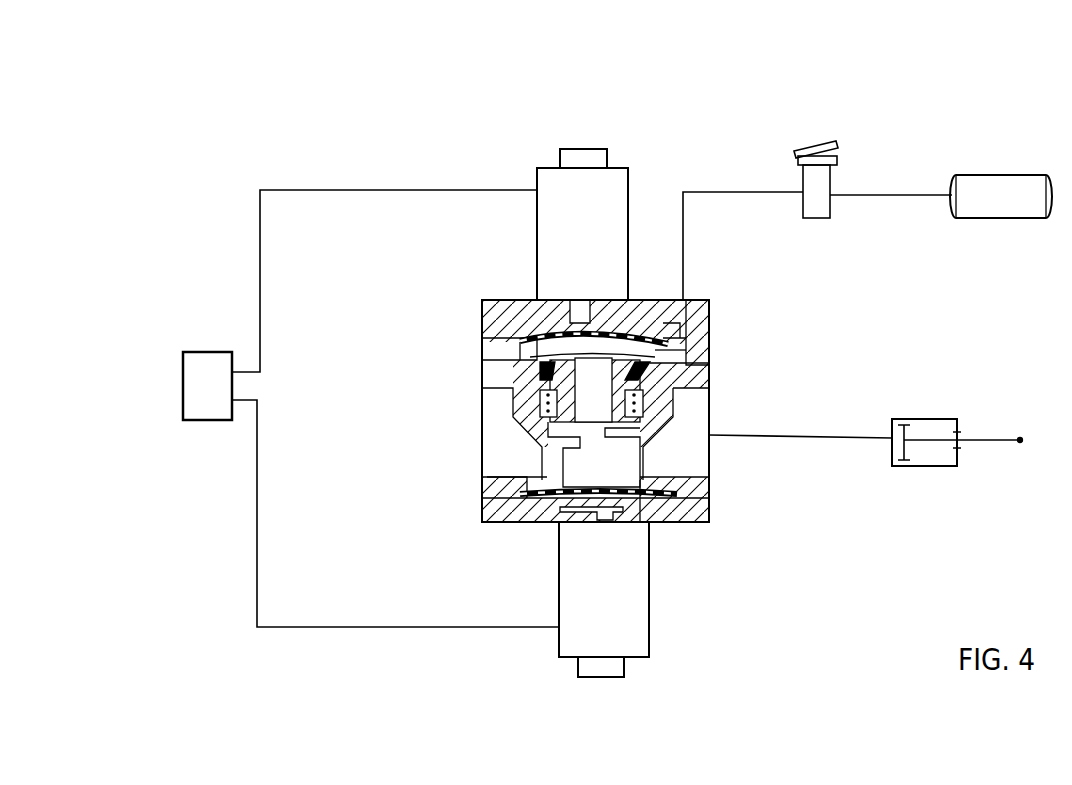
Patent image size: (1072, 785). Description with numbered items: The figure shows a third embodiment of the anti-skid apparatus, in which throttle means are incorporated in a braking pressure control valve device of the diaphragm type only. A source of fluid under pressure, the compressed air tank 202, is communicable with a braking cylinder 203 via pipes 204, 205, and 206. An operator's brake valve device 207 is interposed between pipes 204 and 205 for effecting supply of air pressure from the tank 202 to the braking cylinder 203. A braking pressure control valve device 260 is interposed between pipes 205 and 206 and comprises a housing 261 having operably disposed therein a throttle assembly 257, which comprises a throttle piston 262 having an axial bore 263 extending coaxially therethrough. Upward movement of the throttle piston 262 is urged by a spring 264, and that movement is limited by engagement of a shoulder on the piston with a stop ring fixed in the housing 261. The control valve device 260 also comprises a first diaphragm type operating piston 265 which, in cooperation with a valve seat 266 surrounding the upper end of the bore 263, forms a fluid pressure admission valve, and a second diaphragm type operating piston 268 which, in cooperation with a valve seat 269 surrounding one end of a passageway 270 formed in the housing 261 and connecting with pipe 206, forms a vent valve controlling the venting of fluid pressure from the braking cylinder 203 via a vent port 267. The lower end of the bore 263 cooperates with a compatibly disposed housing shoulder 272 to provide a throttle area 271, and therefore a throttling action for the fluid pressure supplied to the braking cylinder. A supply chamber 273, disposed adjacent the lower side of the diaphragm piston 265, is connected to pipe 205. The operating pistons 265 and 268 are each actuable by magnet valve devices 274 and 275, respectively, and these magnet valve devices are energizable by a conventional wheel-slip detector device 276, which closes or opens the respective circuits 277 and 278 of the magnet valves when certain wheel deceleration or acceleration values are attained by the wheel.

The compressed air tank 202 is at (1005, 190).
The braking cylinder 203 is at (928, 433).
The pipe 204 is at (900, 195).
The pipe 205 is at (730, 190).
The pipe 206 is at (806, 435).
The operator's brake valve device 207 is at (820, 195).
The throttle assembly 257 is at (556, 400).
The braking pressure control valve device 260 is at (722, 352).
The housing 261 is at (525, 479).
The throttle piston 262 is at (540, 361).
The axial bore 263 is at (660, 400).
The spring 264 is at (538, 392).
The first diaphragm type operating piston 265 is at (645, 340).
The valve seat 266 is at (690, 352).
The vent port 267 is at (510, 450).
The second diaphragm type operating piston 268 is at (688, 522).
The valve seat 269 is at (668, 482).
The passageway 270 is at (485, 505).
The throttle area 271 is at (645, 428).
The housing shoulder 272 is at (643, 435).
The supply chamber 273 is at (685, 312).
The magnet valve device 274 is at (557, 187).
The magnet valve device 275 is at (632, 615).
The wheel-slip detector device 276 is at (200, 368).
The circuit 277 is at (260, 228).
The circuit 278 is at (257, 540).